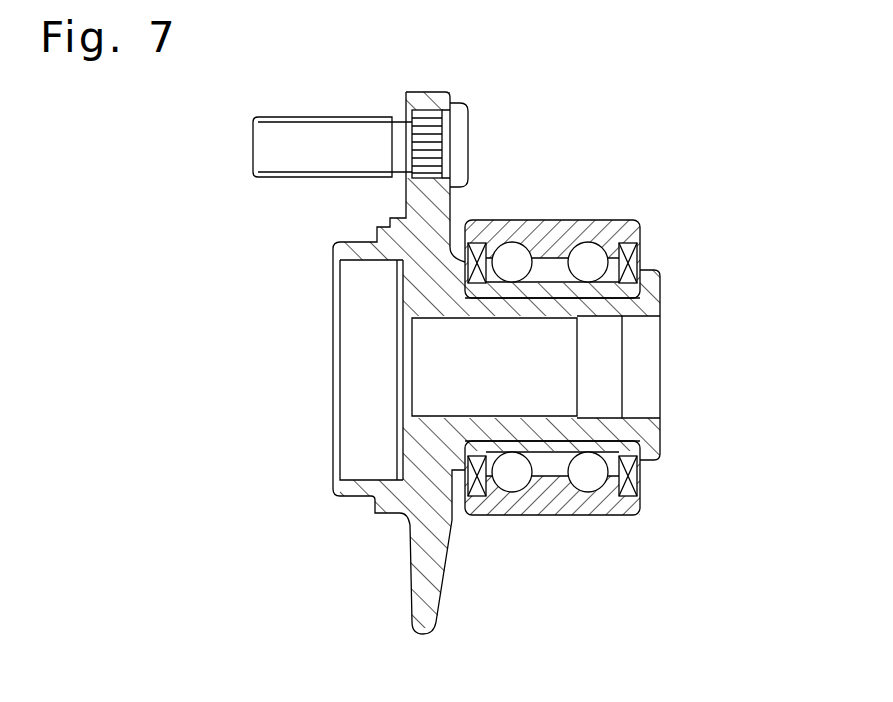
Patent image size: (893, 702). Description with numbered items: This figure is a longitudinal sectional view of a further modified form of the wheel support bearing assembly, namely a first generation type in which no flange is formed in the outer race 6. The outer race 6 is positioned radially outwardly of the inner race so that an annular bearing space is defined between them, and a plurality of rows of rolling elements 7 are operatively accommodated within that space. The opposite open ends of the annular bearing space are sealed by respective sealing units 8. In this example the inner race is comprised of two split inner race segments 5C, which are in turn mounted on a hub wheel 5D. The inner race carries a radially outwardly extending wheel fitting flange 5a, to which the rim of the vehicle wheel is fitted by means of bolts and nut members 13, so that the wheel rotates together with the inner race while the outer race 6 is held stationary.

The bolts and nut members 13 is at (344, 137).
The rolling elements 7 is at (595, 258).
The sealing units 8 is at (476, 254).
The split inner race segments 5C is at (412, 316).
The hub wheel 5D is at (417, 433).
The wheel fitting flange 5a is at (417, 568).
The outer race 6 is at (553, 503).